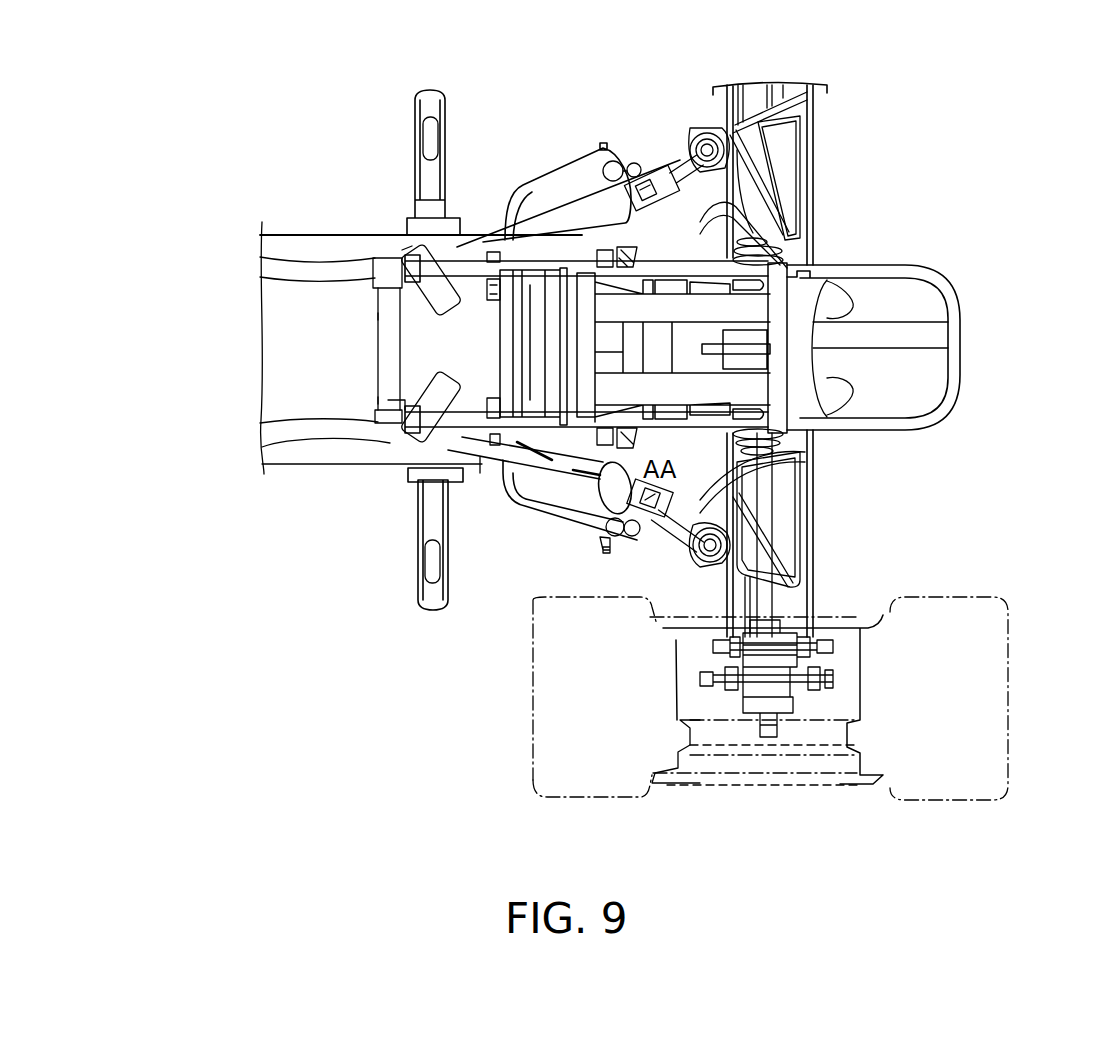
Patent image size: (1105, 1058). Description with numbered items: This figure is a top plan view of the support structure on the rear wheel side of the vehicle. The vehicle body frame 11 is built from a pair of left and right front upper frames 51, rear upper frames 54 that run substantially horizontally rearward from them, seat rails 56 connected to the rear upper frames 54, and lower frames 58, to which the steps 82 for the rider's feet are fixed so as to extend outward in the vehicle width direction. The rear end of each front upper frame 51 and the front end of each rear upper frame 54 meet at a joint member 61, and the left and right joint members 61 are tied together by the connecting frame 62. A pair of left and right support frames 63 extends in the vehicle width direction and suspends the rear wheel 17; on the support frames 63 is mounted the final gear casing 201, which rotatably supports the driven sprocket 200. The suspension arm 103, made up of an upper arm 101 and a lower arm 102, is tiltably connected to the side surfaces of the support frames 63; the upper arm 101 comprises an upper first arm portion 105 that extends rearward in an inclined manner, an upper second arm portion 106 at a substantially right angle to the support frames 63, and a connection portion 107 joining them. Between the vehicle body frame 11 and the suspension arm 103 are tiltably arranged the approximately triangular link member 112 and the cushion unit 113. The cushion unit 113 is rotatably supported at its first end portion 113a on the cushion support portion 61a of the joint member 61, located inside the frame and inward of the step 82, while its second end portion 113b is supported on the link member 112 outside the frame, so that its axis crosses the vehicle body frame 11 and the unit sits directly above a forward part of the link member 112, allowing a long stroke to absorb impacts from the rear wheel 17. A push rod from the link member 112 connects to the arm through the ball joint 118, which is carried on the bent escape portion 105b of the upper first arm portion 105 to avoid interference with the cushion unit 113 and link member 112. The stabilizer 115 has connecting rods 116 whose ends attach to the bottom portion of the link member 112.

The vehicle body frame 11 is at (307, 214).
The rear wheel 17 is at (535, 780).
The front upper frame 51 is at (328, 270).
The rear upper frame 54 is at (482, 268).
The seat rail 56 is at (873, 428).
The lower frame 58 is at (282, 238).
The joint member 61 is at (392, 258).
The cushion support portion 61a is at (394, 258).
The connecting frame 62 is at (387, 350).
The support frame 63 is at (853, 307).
The step 82 is at (413, 100).
The upper arm 101 is at (815, 540).
The lower arm 102 is at (815, 565).
The suspension arm 103 is at (937, 515).
The upper first arm portion 105 is at (716, 572).
The escape portion 105b is at (708, 568).
The upper second arm portion 106 is at (818, 592).
The connection portion 107 is at (893, 607).
The link member 112 is at (672, 166).
The cushion unit 113 is at (540, 227).
The first end portion 113a is at (378, 313).
The second end portion 113b is at (652, 168).
The stabilizer 115 is at (515, 505).
The connecting rod 116 is at (620, 162).
The ball joint 118 is at (700, 560).
The driven sprocket 200 is at (813, 348).
The final gear casing 201 is at (813, 322).